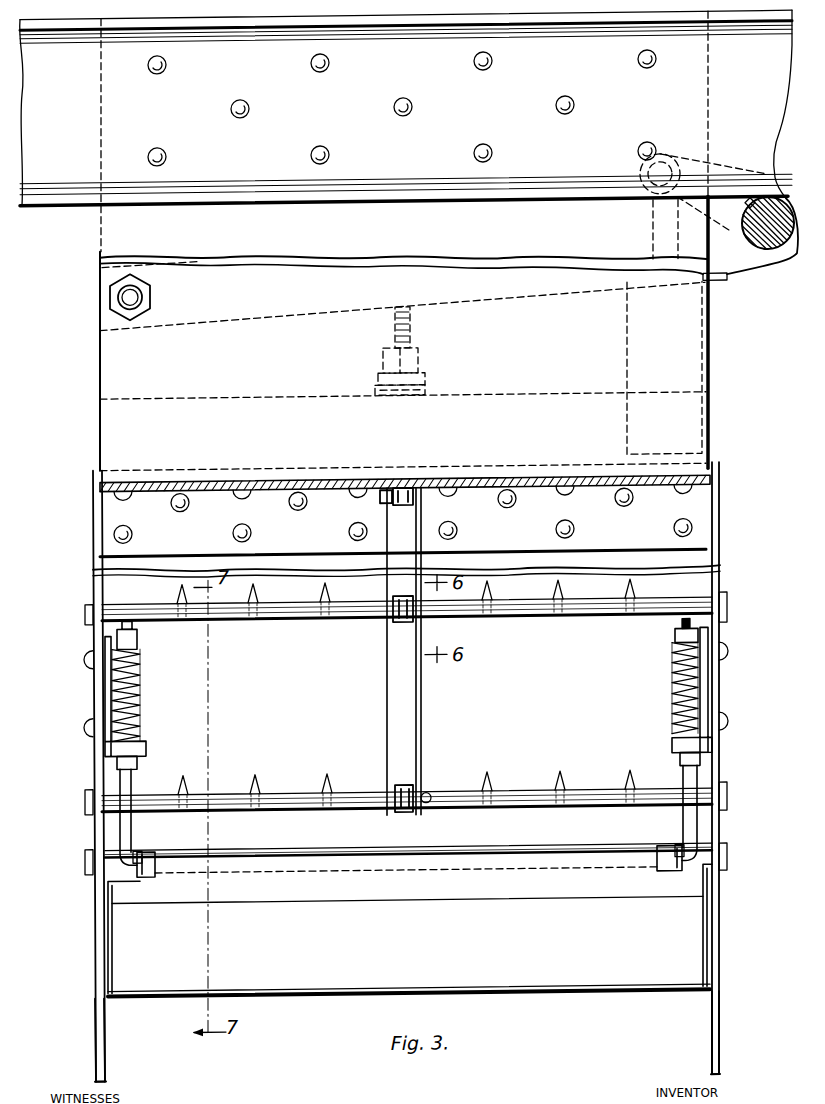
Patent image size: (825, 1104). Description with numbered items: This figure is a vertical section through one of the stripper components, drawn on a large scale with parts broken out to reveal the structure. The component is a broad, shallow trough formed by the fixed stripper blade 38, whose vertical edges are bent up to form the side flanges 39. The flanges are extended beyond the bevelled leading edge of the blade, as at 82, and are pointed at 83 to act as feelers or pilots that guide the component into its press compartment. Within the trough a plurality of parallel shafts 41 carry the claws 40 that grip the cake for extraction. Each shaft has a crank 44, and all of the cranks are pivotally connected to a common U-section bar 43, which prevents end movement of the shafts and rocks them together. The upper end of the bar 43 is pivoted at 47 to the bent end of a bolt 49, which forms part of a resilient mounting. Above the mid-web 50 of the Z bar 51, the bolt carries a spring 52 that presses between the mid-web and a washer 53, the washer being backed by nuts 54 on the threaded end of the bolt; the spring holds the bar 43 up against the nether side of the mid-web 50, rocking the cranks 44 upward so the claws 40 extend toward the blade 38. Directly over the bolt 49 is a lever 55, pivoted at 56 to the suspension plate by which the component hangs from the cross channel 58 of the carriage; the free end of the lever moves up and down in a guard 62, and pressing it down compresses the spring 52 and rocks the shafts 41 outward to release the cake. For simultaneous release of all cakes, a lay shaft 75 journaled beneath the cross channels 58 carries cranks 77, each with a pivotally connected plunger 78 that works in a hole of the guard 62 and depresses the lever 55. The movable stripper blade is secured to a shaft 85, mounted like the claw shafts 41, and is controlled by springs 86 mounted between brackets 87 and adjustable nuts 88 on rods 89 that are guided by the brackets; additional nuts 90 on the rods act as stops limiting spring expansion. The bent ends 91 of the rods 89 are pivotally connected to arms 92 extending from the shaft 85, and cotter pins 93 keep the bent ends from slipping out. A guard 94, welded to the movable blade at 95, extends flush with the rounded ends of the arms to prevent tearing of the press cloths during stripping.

The blade 38 is at (406, 648).
The side flanges 39 is at (94, 771).
The claws 40 is at (556, 590).
The parallel shafts 41 is at (512, 619).
The bar 43 is at (417, 709).
The cranks 44 is at (390, 622).
The pivot 47 is at (415, 500).
The bolt 49 is at (412, 330).
The mid-web 50 is at (456, 479).
The Z bar 51 is at (118, 509).
The spring 52 is at (425, 393).
The washer 53 is at (425, 378).
The nuts 54 is at (418, 355).
The lever 55 is at (199, 316).
The pivot 56 is at (142, 294).
The cross channel 58 is at (406, 131).
The guard 62 is at (640, 415).
The lay shaft 75 is at (772, 240).
The cranks 77 is at (748, 257).
The plunger 78 is at (650, 237).
The extended flanges 82 is at (92, 1011).
The pointed ends 83 is at (95, 1078).
The shaft 85 is at (703, 855).
The springs 86 is at (141, 688).
The brackets 87 is at (146, 749).
The adjustable nuts 88 is at (699, 639).
The rods 89 is at (131, 792).
The nuts 90 is at (138, 762).
The bent ends 91 is at (155, 866).
The arms 92 is at (143, 880).
The cotter pins 93 is at (150, 851).
The guard 94 is at (445, 902).
The weld 95 is at (520, 905).